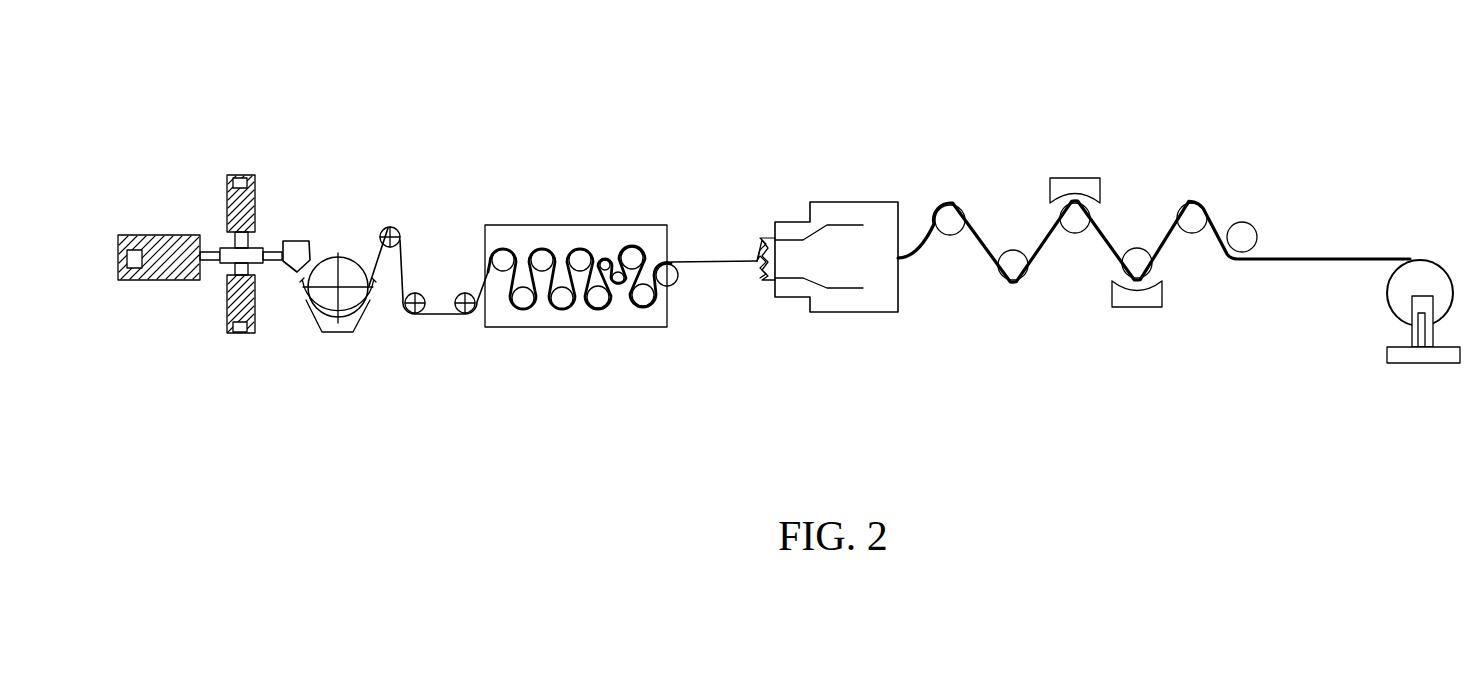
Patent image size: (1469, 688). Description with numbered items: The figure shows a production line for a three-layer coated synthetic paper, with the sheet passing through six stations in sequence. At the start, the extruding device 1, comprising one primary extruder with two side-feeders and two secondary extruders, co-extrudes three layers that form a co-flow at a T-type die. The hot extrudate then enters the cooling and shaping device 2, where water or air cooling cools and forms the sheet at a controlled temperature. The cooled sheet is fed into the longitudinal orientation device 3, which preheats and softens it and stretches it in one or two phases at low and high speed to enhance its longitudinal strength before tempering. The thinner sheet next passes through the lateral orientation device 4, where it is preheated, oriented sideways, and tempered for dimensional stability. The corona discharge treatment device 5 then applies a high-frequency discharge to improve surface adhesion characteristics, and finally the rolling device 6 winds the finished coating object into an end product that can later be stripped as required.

The extruding device 1 is at (262, 362).
The cooling and shaping device 2 is at (337, 255).
The longitudinal orientation device 3 is at (590, 217).
The lateral orientation device 4 is at (847, 193).
The corona discharge treatment device 5 is at (1073, 175).
The rolling device 6 is at (1398, 228).